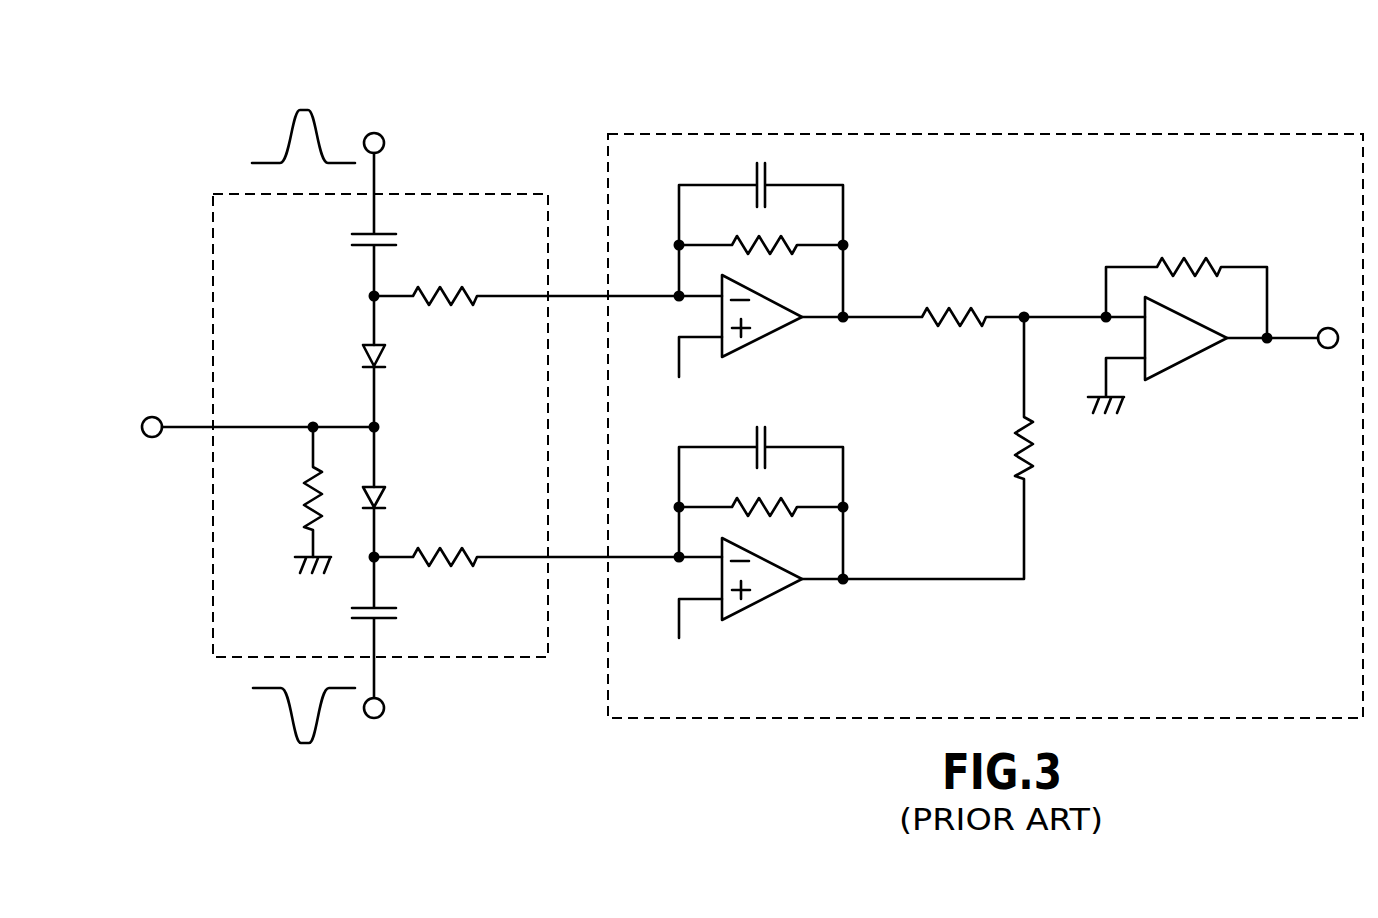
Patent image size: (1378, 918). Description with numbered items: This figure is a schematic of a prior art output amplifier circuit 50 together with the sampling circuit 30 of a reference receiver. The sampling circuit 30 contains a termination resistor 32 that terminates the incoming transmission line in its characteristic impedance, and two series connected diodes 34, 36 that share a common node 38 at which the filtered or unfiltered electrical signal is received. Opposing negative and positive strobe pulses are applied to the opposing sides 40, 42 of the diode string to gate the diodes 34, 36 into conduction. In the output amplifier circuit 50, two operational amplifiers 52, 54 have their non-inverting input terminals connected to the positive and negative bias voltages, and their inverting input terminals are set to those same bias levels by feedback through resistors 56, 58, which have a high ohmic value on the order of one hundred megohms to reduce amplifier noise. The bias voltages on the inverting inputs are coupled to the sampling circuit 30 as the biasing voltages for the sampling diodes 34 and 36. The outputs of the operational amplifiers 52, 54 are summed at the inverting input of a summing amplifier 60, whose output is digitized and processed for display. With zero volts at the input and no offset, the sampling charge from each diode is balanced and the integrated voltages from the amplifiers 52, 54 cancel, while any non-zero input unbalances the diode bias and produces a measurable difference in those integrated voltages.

The sampling circuit 30 is at (497, 193).
The termination resistor 32 is at (303, 487).
The diode 34 is at (387, 497).
The diode 36 is at (387, 356).
The common node 38 is at (381, 427).
The opposing side of diodes 40 is at (374, 719).
The opposing side of diodes 42 is at (375, 131).
The output amplifier circuit 50 is at (1280, 133).
The operational amplifier 52 is at (748, 610).
The operational amplifier 54 is at (748, 347).
The feedback resistor 56 is at (761, 518).
The feedback resistor 58 is at (761, 256).
The summing amplifier 60 is at (1172, 369).